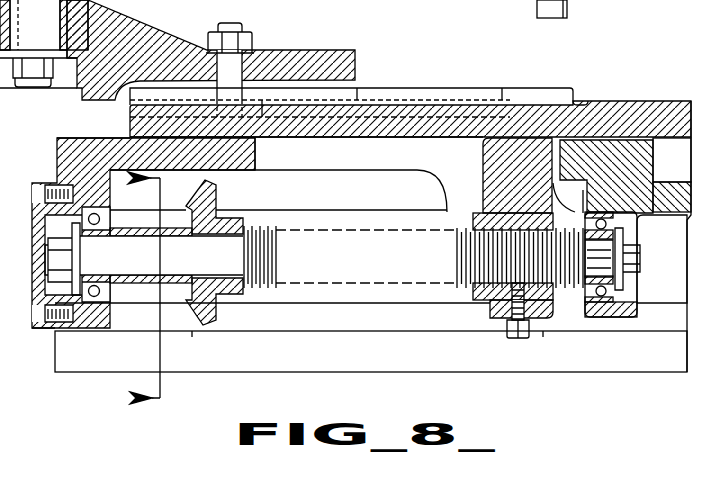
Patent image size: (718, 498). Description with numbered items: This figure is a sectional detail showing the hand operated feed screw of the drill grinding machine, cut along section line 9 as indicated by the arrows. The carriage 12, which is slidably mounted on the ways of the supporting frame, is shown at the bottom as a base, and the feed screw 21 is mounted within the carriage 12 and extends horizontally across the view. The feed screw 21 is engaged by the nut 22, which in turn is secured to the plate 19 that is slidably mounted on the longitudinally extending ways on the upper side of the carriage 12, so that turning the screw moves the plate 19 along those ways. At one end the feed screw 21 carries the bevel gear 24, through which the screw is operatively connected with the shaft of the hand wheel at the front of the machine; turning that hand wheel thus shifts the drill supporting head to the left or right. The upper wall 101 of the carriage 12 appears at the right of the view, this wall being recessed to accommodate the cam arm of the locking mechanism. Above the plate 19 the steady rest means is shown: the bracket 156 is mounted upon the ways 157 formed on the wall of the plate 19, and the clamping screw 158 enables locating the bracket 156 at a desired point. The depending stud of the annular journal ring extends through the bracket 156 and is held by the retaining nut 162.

The section line 9- 9 is at (152, 290).
The carriage 12 is at (465, 373).
The plate 19 is at (612, 100).
The feed screw 21 is at (372, 283).
The nut 22 is at (520, 289).
The bevel gear 24 is at (176, 271).
The upper wall 101 is at (666, 204).
The bracket 156 is at (138, 25).
The ways 157 is at (427, 97).
The clamping screw 158 is at (243, 33).
The retaining nut 162 is at (20, 78).